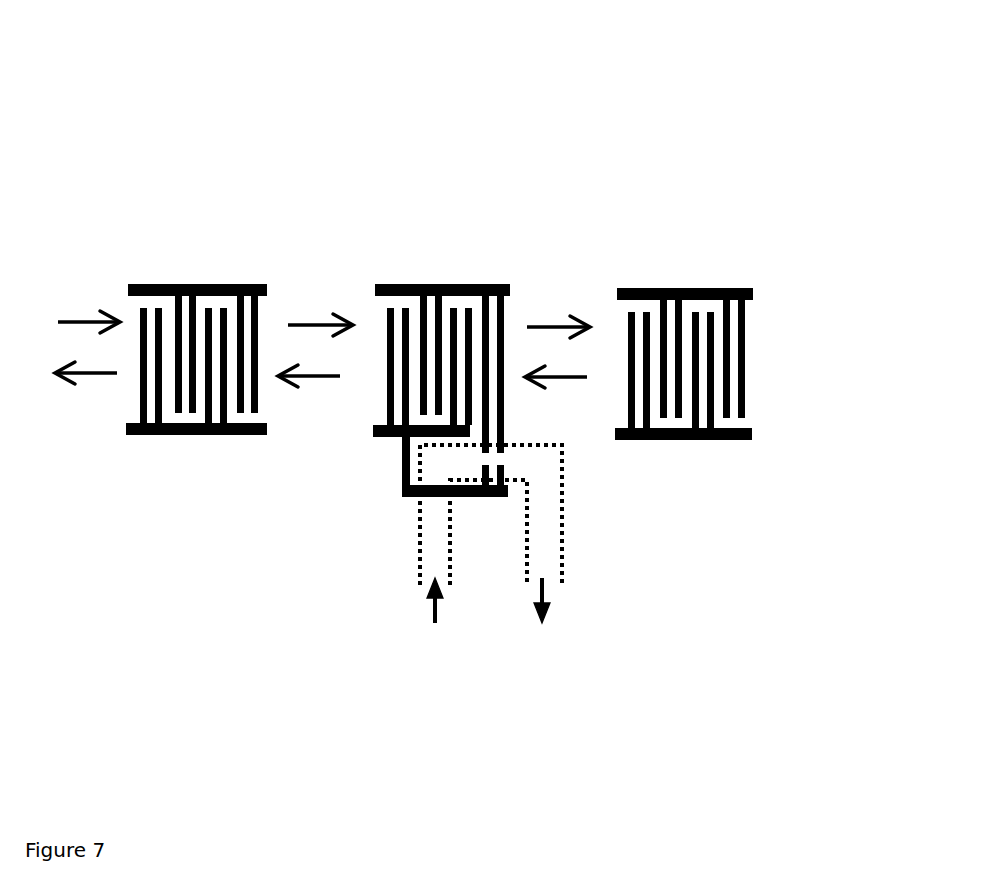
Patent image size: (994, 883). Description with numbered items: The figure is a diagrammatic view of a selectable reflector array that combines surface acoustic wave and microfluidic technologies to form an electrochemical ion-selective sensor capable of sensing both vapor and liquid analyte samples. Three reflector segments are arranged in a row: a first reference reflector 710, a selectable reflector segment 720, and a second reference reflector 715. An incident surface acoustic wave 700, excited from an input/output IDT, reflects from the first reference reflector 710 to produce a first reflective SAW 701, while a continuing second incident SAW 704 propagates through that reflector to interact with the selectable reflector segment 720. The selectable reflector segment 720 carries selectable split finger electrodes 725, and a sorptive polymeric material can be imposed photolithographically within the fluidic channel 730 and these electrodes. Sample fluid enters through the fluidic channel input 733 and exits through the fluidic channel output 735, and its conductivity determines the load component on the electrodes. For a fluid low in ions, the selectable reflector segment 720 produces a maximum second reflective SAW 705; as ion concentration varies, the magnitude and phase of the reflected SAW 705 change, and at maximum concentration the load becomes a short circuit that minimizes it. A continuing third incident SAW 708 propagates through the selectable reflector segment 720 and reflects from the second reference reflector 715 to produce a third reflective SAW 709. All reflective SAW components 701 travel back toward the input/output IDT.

The incident surface acoustic wave 700 is at (97, 284).
The first reflective SAW 701 is at (77, 426).
The second incident SAW 704 is at (312, 272).
The second reflective SAW 705 is at (314, 414).
The third incident SAW 708 is at (574, 290).
The third reflective SAW 709 is at (583, 414).
The first reference reflector 710 is at (197, 471).
The second reference reflector 715 is at (747, 474).
The selectable reflector segment 720 is at (415, 256).
The selectable split finger electrodes 725 is at (497, 313).
The fluidic channel 730 is at (580, 533).
The fluidic channel input 733 is at (406, 661).
The fluidic channel output 735 is at (532, 661).